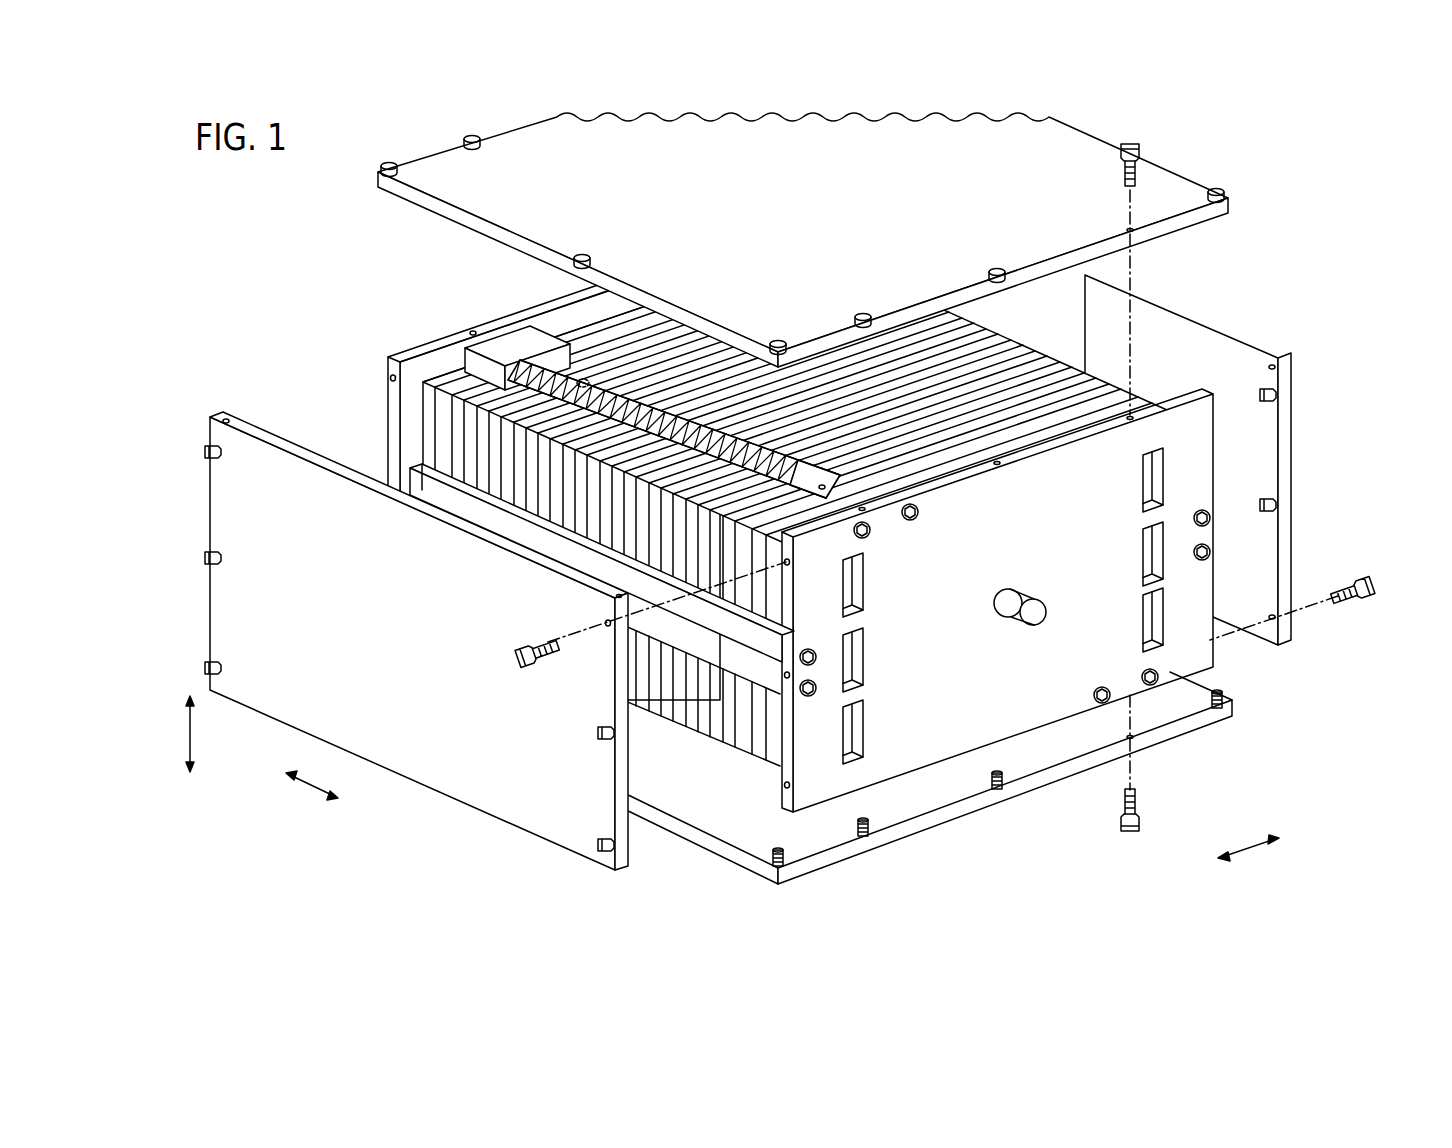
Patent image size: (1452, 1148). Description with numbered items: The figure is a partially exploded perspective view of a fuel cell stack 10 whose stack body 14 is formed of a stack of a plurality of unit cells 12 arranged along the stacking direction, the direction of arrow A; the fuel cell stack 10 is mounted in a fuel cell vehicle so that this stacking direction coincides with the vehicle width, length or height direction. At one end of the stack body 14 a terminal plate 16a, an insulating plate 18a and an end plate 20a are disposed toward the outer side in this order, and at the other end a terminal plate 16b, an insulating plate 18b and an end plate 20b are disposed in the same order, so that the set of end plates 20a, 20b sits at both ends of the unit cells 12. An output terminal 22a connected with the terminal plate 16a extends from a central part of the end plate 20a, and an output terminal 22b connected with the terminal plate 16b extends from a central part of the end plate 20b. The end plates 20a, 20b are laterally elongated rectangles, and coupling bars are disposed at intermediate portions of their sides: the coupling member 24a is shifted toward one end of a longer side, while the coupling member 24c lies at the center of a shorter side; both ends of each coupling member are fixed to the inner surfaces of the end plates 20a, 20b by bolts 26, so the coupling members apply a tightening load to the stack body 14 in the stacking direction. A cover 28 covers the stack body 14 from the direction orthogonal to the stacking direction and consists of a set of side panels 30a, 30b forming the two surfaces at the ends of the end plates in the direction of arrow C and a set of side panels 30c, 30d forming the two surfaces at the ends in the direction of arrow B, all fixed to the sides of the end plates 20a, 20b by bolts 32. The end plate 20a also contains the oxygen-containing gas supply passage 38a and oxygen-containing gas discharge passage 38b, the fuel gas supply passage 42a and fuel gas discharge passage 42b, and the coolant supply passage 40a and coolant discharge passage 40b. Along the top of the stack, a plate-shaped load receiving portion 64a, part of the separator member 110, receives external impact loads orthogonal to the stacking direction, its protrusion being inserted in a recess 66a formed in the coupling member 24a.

The fuel cell stack 10 is at (257, 198).
The unit cells 12 is at (1006, 347).
The stack body 14 is at (873, 475).
The terminal plate 16a is at (757, 752).
The terminal plate 16b is at (446, 417).
The insulating plate 18a is at (772, 757).
The insulating plate 18b is at (447, 378).
The end plate 20a is at (997, 629).
The end plate 20b is at (447, 335).
The output terminal 22a is at (1033, 622).
The output terminal 22b is at (578, 388).
The coupling member 24a is at (516, 340).
The coupling member 24c is at (462, 508).
The bolts 26 is at (1205, 512).
The cover 28 is at (818, 240).
The side panel 30a is at (1213, 215).
The side panel 30b is at (1050, 783).
The side panel 30c is at (510, 822).
The side panel 30d is at (1290, 430).
The bolts 32 is at (1136, 150).
The oxygen-containing gas supply passage 38a is at (856, 588).
The oxygen-containing gas discharge passage 38b is at (1143, 618).
The coolant supply passage 40a is at (856, 659).
The coolant discharge passage 40b is at (1143, 552).
The fuel gas supply passage 42a is at (1143, 482).
The fuel gas discharge passage 42b is at (856, 728).
The load receiving portion 64a is at (627, 432).
The recess 66a is at (568, 362).
The separator member 110 is at (674, 355).